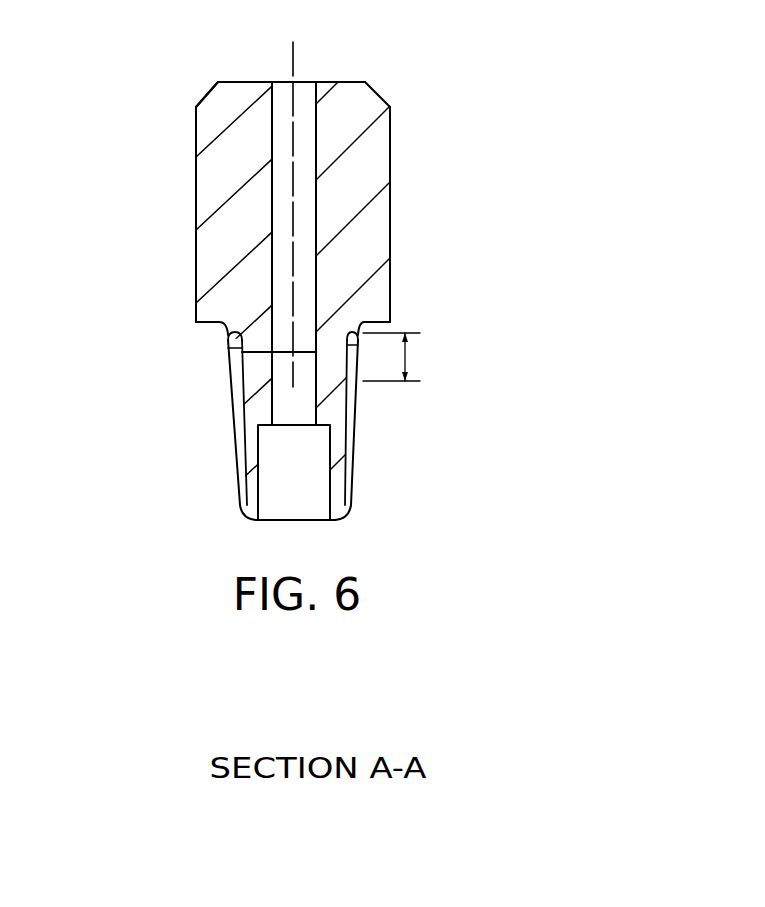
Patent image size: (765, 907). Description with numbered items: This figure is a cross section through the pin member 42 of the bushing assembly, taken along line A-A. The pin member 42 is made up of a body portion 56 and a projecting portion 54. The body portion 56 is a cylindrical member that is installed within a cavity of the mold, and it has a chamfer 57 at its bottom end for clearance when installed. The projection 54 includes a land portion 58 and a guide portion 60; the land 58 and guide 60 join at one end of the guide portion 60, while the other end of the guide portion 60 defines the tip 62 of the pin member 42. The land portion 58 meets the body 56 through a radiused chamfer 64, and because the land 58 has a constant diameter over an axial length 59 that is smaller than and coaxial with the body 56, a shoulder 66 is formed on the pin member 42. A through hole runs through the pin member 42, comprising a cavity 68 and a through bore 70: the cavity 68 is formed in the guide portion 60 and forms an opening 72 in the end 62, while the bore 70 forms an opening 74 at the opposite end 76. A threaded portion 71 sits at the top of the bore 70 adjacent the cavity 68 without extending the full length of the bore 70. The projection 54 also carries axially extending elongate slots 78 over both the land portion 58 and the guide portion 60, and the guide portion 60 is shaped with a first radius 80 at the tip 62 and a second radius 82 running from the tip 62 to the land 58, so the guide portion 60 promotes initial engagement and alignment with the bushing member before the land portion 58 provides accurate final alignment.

The pin member 42 is at (194, 175).
The projecting portion 54 is at (256, 407).
The body portion 56 is at (391, 155).
The chamfer 57 is at (207, 98).
The land portion 58 is at (227, 362).
The axial length 59 is at (408, 352).
The guide portion 60 is at (370, 393).
The tip 62 is at (277, 523).
The radiused chamfer 64 is at (360, 318).
The shoulder 66 is at (203, 326).
The cavity 68 is at (283, 473).
The through bore 70 is at (305, 132).
The threaded portion 71 is at (282, 393).
The opening 72 is at (310, 522).
The opening 74 is at (282, 82).
The opposite end 76 is at (235, 82).
The elongate slots 78 is at (244, 426).
The first radius 80 is at (250, 519).
The second radius 82 is at (355, 440).